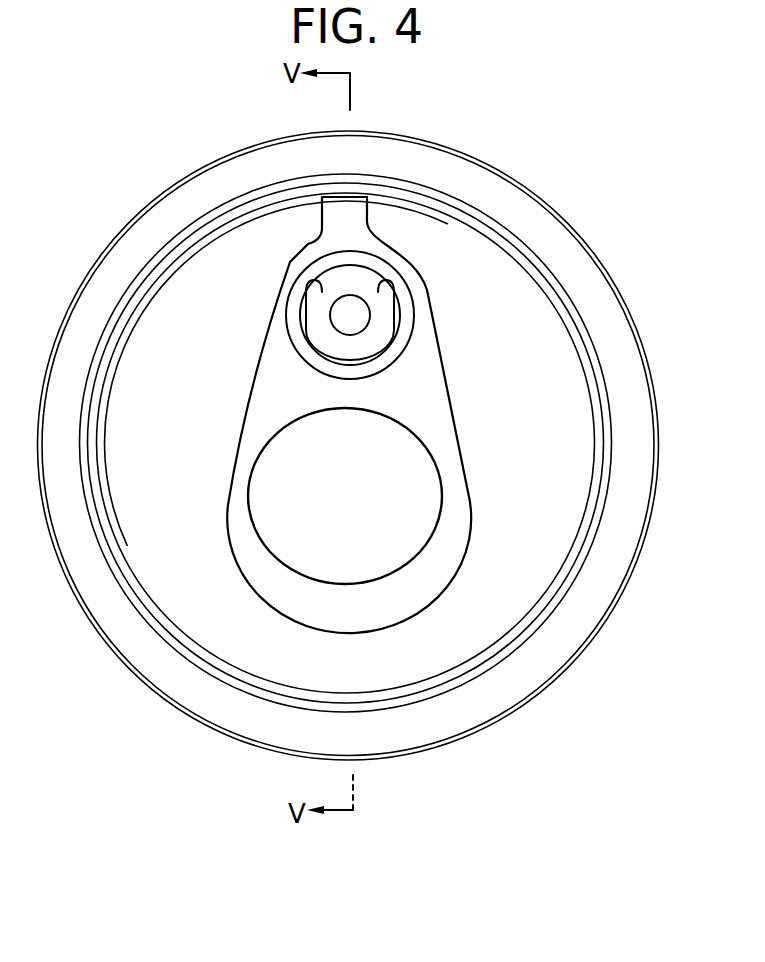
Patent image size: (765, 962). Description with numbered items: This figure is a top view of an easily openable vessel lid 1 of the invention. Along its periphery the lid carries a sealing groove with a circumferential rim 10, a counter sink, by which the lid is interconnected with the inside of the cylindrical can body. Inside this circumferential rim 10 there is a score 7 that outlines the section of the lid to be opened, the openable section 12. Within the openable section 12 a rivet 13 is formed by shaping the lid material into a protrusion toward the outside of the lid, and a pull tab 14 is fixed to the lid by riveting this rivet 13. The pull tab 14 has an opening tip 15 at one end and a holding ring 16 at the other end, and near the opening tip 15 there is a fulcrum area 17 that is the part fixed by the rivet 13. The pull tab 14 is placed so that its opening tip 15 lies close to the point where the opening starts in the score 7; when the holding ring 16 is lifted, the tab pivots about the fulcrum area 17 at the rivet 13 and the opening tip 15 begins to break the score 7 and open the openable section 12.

The can end 1 is at (556, 200).
The score 7 is at (580, 540).
The circumferential rim 10 is at (486, 698).
The openable section 12 is at (360, 663).
The rivet 13 is at (355, 315).
The pull tab 14 is at (265, 392).
The opening tip 15 is at (353, 208).
The holding ring 16 is at (237, 497).
The fulcrum area 17 is at (308, 317).